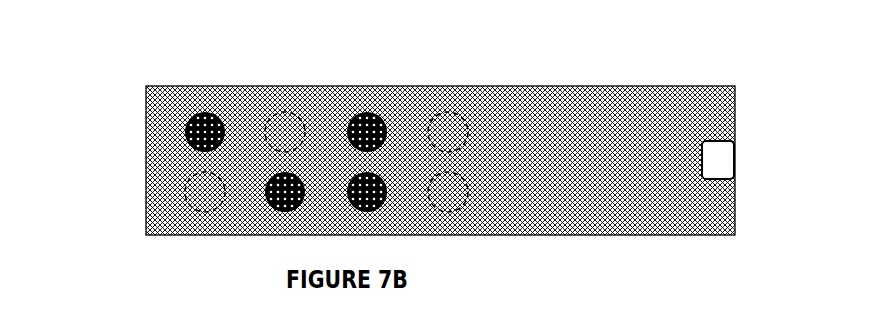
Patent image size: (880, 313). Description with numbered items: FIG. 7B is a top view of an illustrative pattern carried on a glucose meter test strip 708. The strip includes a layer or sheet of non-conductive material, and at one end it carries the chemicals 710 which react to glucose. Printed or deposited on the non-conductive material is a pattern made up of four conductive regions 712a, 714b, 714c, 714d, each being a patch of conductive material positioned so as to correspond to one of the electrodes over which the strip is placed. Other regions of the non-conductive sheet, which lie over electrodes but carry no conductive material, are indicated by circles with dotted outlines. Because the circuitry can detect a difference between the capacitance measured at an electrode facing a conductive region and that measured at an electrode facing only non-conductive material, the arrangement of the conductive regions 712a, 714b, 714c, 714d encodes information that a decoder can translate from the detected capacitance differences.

The glucose meter test strip 708 is at (612, 80).
The chemicals 710 is at (727, 156).
The conductive region 712a is at (187, 123).
The conductive region 714b is at (270, 178).
The conductive region 714c is at (352, 178).
The conductive region 714d is at (354, 117).